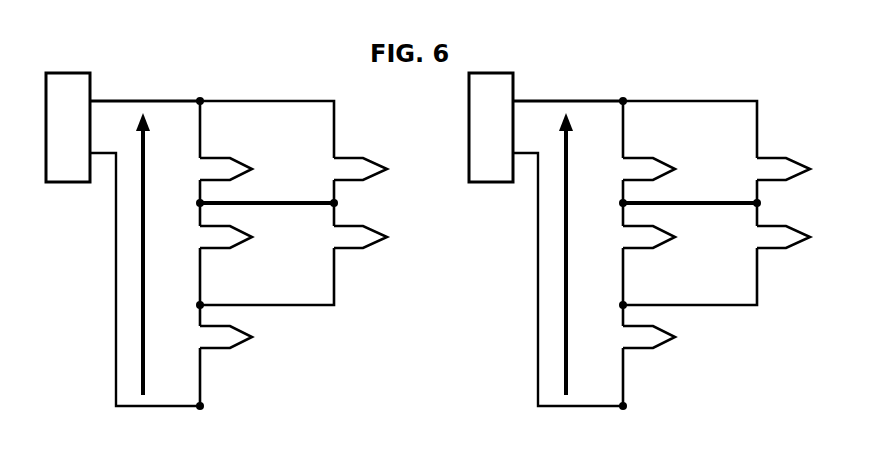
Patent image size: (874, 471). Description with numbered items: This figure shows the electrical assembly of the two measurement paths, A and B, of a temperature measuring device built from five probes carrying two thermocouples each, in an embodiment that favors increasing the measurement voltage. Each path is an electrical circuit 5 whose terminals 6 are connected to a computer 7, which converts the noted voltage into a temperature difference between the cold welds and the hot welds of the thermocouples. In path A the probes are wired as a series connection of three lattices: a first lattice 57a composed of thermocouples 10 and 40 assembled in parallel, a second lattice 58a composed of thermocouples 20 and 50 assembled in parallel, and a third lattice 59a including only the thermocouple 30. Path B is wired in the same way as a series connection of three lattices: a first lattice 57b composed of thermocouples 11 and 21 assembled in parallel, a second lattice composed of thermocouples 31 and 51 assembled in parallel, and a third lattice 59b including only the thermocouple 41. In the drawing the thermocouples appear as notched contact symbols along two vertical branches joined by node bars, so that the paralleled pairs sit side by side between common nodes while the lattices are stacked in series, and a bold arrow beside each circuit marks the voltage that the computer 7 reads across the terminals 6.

The electrical circuit 5 is at (243, 60).
The terminals 6 is at (165, 100).
The computer 7 is at (74, 137).
The thermocouple 10 is at (240, 169).
The thermocouple 20 is at (240, 237).
The thermocouple 30 is at (240, 337).
The thermocouple 40 is at (375, 169).
The thermocouple 50 is at (375, 237).
The thermocouple 11 is at (663, 169).
The thermocouple 31 is at (663, 237).
The thermocouple 41 is at (663, 337).
The thermocouple 21 is at (798, 169).
The thermocouple 51 is at (798, 237).
The first lattice 57a is at (270, 127).
The first lattice 57b is at (693, 127).
The second lattice 58a is at (312, 268).
The third lattice 59a is at (272, 380).
The third lattice 59b is at (695, 380).